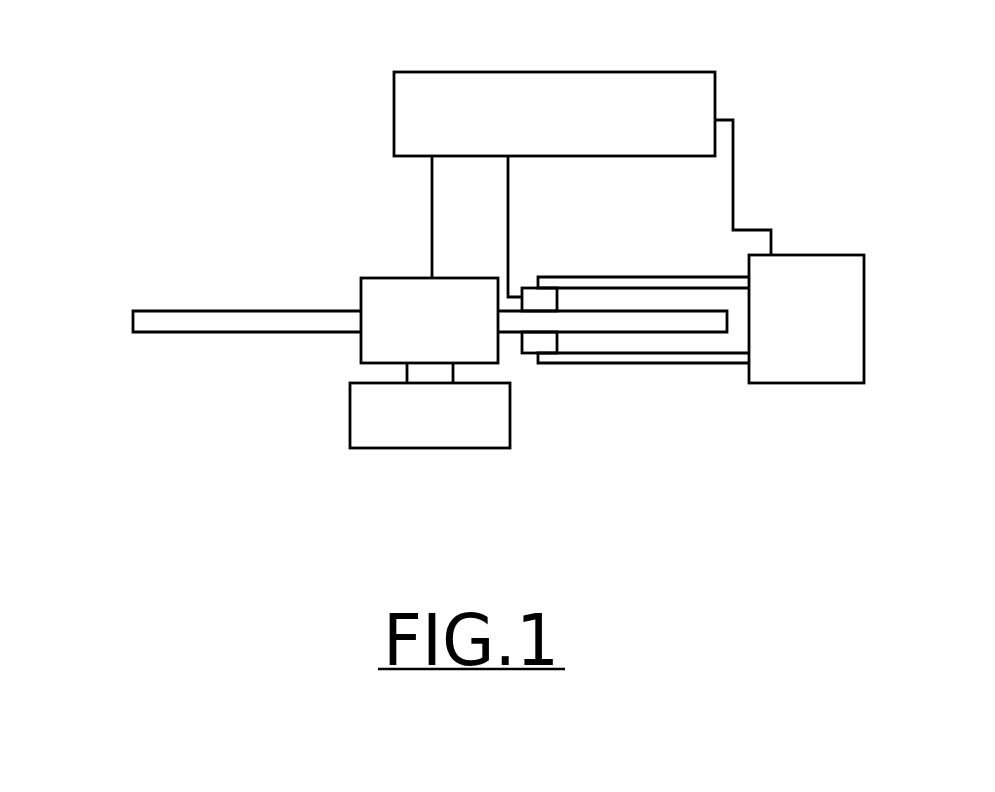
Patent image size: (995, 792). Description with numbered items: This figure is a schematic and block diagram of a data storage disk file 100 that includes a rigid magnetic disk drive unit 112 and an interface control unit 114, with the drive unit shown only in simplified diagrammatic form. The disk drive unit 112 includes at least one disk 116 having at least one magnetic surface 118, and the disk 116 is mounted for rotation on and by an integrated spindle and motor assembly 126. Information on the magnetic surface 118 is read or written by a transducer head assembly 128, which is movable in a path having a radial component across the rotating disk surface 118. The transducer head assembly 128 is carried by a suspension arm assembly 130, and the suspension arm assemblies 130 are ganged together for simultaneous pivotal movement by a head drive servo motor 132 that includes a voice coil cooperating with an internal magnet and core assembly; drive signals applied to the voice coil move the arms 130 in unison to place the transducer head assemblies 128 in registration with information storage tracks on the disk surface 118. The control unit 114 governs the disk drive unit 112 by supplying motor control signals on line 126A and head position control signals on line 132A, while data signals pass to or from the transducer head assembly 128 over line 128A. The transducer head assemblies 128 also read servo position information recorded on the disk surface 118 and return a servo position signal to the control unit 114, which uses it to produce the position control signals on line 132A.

The data storage disk file 100 is at (300, 101).
The rigid magnetic disk drive unit 112 is at (298, 251).
The interface control unit 114 is at (554, 114).
The disk 116 is at (133, 315).
The magnetic surface 118 is at (238, 311).
The integrated spindle and motor assembly 126 is at (430, 363).
The line 126A is at (397, 217).
The transducer head assembly 128 is at (533, 288).
The line 128A is at (540, 226).
The suspension arm assembly 130 is at (623, 277).
The head drive servo motor 132 is at (806, 319).
The line 132A is at (759, 183).